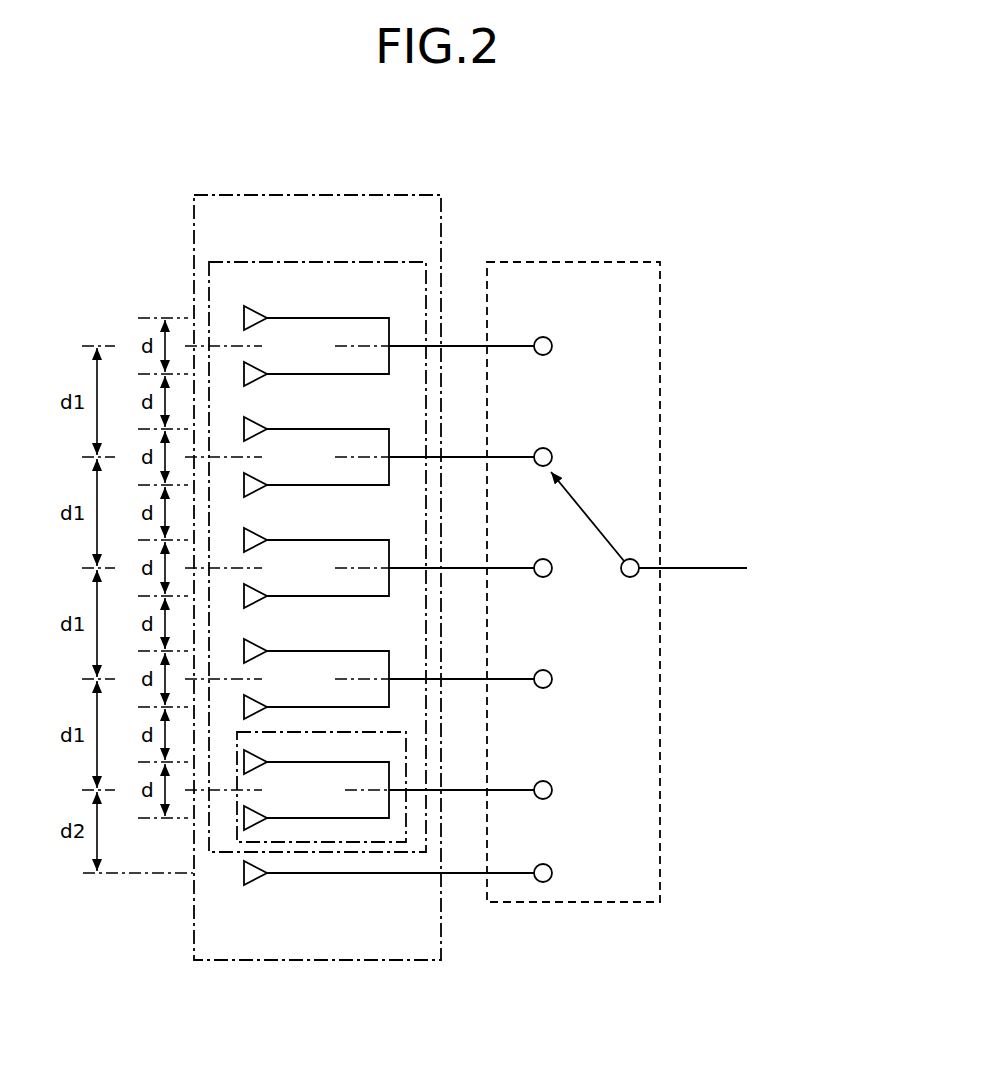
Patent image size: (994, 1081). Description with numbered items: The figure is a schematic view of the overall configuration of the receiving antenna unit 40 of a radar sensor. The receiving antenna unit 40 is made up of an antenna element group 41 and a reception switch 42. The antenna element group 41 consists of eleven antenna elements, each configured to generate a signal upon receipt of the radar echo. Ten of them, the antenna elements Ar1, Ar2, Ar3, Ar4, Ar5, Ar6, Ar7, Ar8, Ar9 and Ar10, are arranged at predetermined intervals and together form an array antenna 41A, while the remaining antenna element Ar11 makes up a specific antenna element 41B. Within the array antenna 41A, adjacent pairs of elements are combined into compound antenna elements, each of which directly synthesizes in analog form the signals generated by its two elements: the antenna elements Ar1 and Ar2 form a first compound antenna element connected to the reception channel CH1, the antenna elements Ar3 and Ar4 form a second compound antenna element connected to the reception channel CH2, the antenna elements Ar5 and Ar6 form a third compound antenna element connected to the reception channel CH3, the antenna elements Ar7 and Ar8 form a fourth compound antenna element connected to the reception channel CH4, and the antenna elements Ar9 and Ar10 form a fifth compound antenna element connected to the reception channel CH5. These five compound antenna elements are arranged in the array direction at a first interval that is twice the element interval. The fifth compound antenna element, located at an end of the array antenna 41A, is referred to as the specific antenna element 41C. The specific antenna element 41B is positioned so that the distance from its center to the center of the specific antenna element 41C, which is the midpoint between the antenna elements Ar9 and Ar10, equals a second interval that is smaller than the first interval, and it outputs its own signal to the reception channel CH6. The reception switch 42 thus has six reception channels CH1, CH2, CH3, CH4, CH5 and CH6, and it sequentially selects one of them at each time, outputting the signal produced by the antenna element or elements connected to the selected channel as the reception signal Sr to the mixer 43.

The receiving antenna unit 40 is at (457, 222).
The antenna element group 41 is at (315, 962).
The array antenna 41A is at (296, 261).
The specific antenna element 41B is at (254, 880).
The specific antenna element 41C is at (363, 844).
The reception switch 42 is at (578, 905).
The mixer 43 is at (814, 568).
The antenna element Ar1 is at (252, 316).
The antenna element Ar2 is at (252, 372).
The antenna element Ar3 is at (252, 427).
The antenna element Ar4 is at (252, 483).
The antenna element Ar5 is at (252, 538).
The antenna element Ar6 is at (252, 594).
The antenna element Ar7 is at (252, 649).
The antenna element Ar8 is at (252, 705).
The antenna element Ar9 is at (252, 760).
The antenna element Ar10 is at (252, 816).
The antenna element Ar11 is at (255, 873).
The reception channel CH1 is at (548, 334).
The reception channel CH2 is at (548, 445).
The reception channel CH3 is at (548, 556).
The reception channel CH4 is at (548, 667).
The reception channel CH5 is at (548, 778).
The reception channel CH6 is at (548, 861).
The reception signal Sr is at (693, 555).